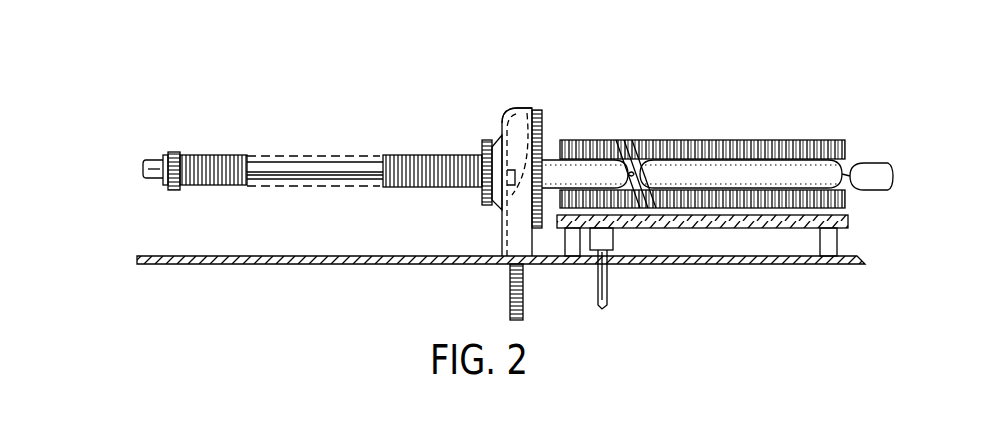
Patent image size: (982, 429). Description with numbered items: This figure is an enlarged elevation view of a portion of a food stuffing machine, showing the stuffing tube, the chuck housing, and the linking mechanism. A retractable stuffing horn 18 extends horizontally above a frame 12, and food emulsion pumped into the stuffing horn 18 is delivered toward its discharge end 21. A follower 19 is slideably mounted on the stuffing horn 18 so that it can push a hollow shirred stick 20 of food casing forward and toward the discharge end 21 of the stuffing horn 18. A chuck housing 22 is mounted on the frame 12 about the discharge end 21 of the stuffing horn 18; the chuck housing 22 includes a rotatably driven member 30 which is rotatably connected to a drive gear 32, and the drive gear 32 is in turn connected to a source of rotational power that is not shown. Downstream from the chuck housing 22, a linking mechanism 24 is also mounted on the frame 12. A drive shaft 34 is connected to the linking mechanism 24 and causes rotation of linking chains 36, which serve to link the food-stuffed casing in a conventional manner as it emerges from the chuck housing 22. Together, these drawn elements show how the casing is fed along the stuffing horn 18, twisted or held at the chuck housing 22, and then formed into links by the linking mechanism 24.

The frame 12 is at (237, 257).
The stuffing horn 18 is at (315, 162).
The follower 19 is at (173, 153).
The hollow shirred stick 20 is at (225, 156).
The discharge end 21 is at (513, 178).
The chuck housing 22 is at (508, 110).
The linking mechanism 24 is at (650, 126).
The rotatably driven member 30 is at (483, 142).
The drive gear 32 is at (510, 290).
The drive shaft 34 is at (607, 293).
The linking chains 36 is at (695, 152).